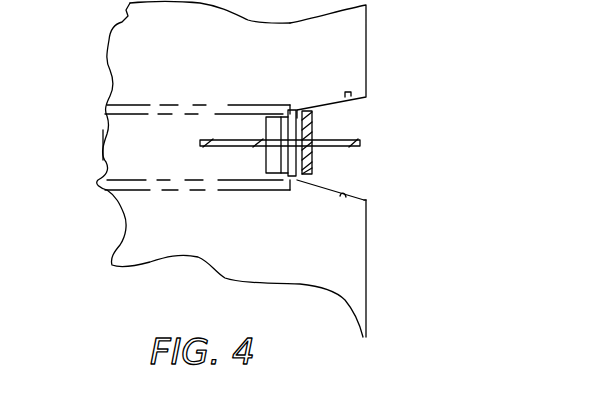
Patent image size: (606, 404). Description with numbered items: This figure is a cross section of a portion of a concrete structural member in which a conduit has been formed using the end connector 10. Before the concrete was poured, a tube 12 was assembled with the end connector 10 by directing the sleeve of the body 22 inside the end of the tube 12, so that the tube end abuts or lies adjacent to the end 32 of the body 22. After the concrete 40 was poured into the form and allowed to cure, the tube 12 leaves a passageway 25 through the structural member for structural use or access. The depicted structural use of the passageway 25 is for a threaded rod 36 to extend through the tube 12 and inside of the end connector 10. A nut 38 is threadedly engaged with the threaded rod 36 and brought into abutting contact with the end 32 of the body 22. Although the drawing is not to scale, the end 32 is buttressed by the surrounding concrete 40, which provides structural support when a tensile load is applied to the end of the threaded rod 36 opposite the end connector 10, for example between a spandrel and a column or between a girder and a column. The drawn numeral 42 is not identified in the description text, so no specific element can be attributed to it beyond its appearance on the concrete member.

The end connector 10 is at (323, 188).
The tube 12 is at (146, 105).
The body 22 is at (313, 188).
The passageway 25 is at (134, 152).
The end 32 is at (313, 104).
The threaded rod 36 is at (356, 147).
The nut 38 is at (313, 119).
The concrete 40 is at (272, 74).
The panel portion 42 is at (368, 50).